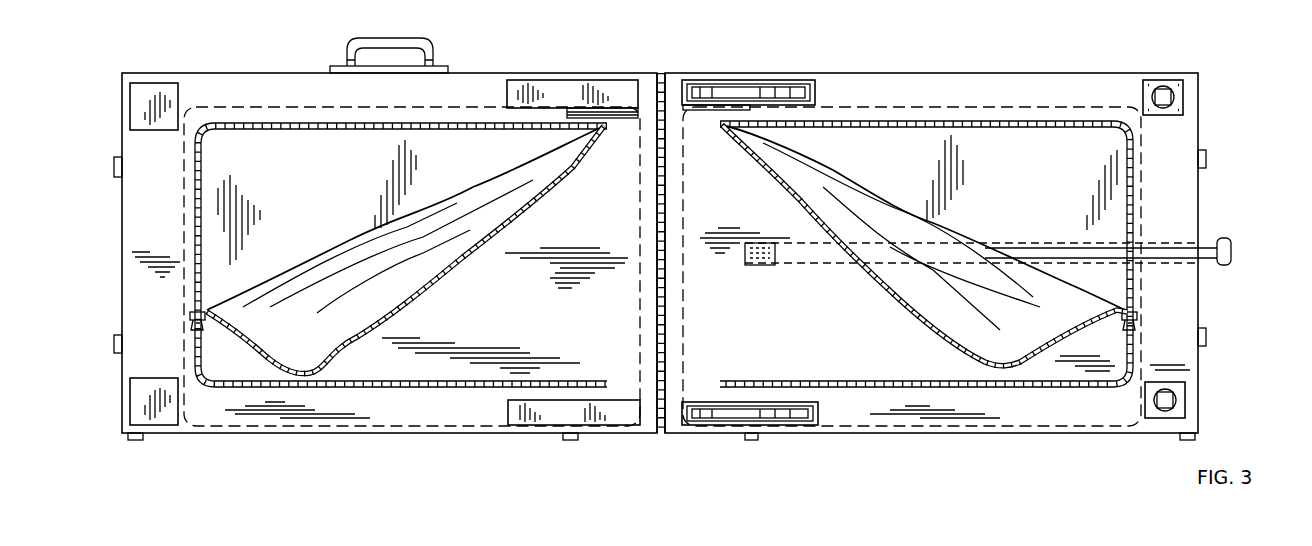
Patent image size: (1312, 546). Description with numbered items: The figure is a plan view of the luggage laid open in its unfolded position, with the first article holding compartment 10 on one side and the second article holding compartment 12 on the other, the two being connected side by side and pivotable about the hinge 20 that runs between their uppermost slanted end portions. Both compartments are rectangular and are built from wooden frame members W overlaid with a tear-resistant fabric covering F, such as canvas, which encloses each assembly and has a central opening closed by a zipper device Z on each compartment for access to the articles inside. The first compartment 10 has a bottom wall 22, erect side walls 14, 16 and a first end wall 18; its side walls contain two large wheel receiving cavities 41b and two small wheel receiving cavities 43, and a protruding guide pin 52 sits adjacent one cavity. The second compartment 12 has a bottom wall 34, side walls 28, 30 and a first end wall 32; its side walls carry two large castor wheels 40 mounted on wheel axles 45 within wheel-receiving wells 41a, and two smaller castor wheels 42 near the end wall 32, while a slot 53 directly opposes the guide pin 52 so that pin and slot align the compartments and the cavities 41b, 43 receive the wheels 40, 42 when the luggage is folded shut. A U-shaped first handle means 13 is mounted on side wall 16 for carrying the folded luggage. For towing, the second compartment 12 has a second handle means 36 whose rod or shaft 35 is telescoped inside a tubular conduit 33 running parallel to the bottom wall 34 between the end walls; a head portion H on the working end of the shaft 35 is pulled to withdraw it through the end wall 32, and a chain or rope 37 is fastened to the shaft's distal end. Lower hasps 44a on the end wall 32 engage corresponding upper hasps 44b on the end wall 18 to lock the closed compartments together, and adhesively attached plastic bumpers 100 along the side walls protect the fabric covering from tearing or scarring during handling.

The first article holding compartment 10 is at (409, 442).
The second article holding compartment 12 is at (991, 442).
The first handle means 13 is at (385, 42).
The side wall 14 is at (340, 433).
The side wall 16 is at (297, 72).
The first end wall 18 is at (121, 217).
The hinge 20 is at (667, 296).
The bottom wall 22 is at (450, 136).
The side wall 28 is at (1080, 434).
The side wall 30 is at (962, 72).
The first end wall 32 is at (1199, 197).
The tubular conduit 33 is at (1010, 245).
The bottom wall 34 is at (1030, 136).
The rod or shaft 35 is at (1040, 250).
The second handle means 36 is at (1233, 245).
The chain or rope 37 is at (758, 268).
The large castor wheel 40 is at (768, 95).
The wheel-receiving well 41a is at (805, 419).
The large wheel receiving cavity 41b is at (560, 93).
The smaller castor wheel 42 is at (1160, 92).
The small wheel receiving cavity 43 is at (158, 96).
The lower hasp 44a is at (1207, 158).
The upper hasp 44b is at (114, 166).
The wheel axle 45 is at (745, 92).
The guide pin 52 is at (632, 108).
The slot 53 is at (712, 112).
The plastic bumper 100 is at (135, 441).
The wooden frame members W is at (262, 106).
The fabric covering F is at (498, 302).
The zipper device Z is at (190, 321).
The head portion H is at (1232, 258).